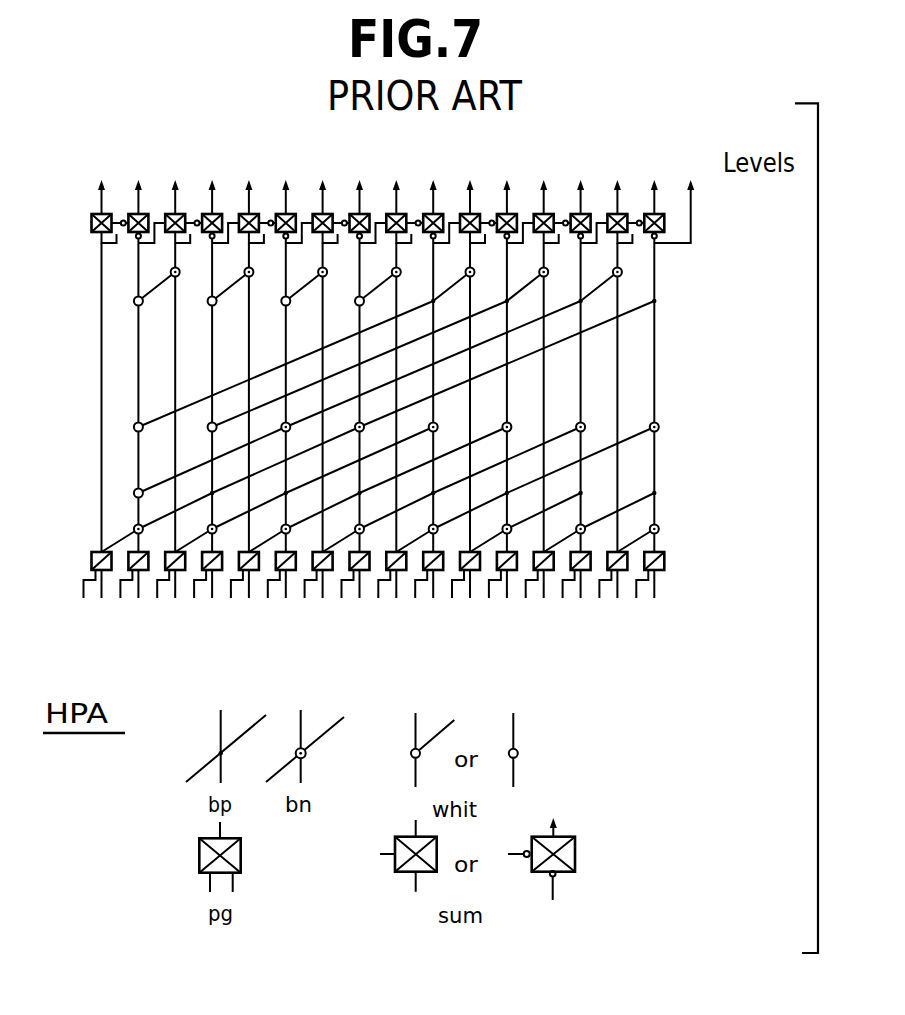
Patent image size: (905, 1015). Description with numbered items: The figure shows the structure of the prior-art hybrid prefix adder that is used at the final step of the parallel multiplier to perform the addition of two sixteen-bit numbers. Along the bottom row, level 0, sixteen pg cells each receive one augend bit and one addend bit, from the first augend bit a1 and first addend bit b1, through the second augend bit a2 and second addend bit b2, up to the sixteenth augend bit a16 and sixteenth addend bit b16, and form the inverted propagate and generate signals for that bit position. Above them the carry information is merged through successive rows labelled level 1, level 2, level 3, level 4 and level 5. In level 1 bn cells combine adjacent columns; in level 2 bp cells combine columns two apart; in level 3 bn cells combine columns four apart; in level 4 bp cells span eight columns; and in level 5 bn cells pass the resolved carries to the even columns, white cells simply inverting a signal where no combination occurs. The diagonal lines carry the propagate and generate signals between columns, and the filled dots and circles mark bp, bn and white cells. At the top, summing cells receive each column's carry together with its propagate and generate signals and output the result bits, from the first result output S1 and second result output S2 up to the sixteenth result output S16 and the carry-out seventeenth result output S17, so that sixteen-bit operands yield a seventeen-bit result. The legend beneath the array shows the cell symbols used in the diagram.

The first sum output S1 is at (109, 350).
The second sum output S2 is at (146, 350).
The sixteenth sum output S16 is at (646, 350).
The seventeenth sum output S17 is at (680, 195).
The level five 5 is at (470, 272).
The level four 4 is at (452, 309).
The level three 3 is at (452, 432).
The level two 2 is at (452, 497).
The level one 1 is at (452, 532).
The level zero 0 is at (427, 575).
The first augend bit a1 is at (73, 609).
The second augend bit a2 is at (95, 587).
The first addend bit b1 is at (108, 637).
The second addend bit b2 is at (145, 588).
The sixteenth augend bit a16 is at (633, 614).
The sixteenth addend bit b16 is at (665, 632).